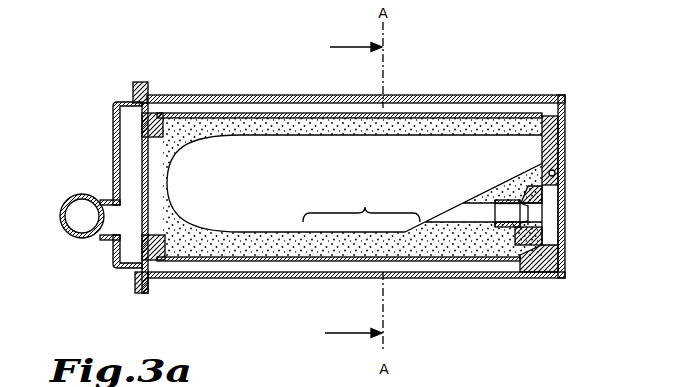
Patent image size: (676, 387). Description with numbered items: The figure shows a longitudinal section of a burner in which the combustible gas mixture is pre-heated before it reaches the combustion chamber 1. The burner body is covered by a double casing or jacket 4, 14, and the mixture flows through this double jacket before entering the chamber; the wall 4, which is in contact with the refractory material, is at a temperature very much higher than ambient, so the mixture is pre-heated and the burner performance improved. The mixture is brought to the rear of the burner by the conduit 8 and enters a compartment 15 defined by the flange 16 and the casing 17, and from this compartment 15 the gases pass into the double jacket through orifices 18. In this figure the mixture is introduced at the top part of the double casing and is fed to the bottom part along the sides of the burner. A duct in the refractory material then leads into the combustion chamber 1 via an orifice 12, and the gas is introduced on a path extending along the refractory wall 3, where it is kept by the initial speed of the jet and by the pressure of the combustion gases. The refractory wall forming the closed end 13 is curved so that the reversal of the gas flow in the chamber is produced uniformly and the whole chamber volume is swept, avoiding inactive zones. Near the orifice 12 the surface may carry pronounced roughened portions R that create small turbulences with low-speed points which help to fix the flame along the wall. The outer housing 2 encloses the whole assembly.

The combustion chamber 1 is at (325, 190).
The housing 2 is at (468, 122).
The refractory wall 3 is at (257, 250).
The wall 4 is at (253, 108).
The conduit 8 is at (102, 200).
The orifice 12 is at (445, 212).
The closed end 13 is at (163, 178).
The double casing 14 is at (433, 100).
The compartment 15 is at (120, 250).
The flange 16 is at (157, 280).
The casing 17 is at (115, 118).
The orifices 18 is at (148, 108).